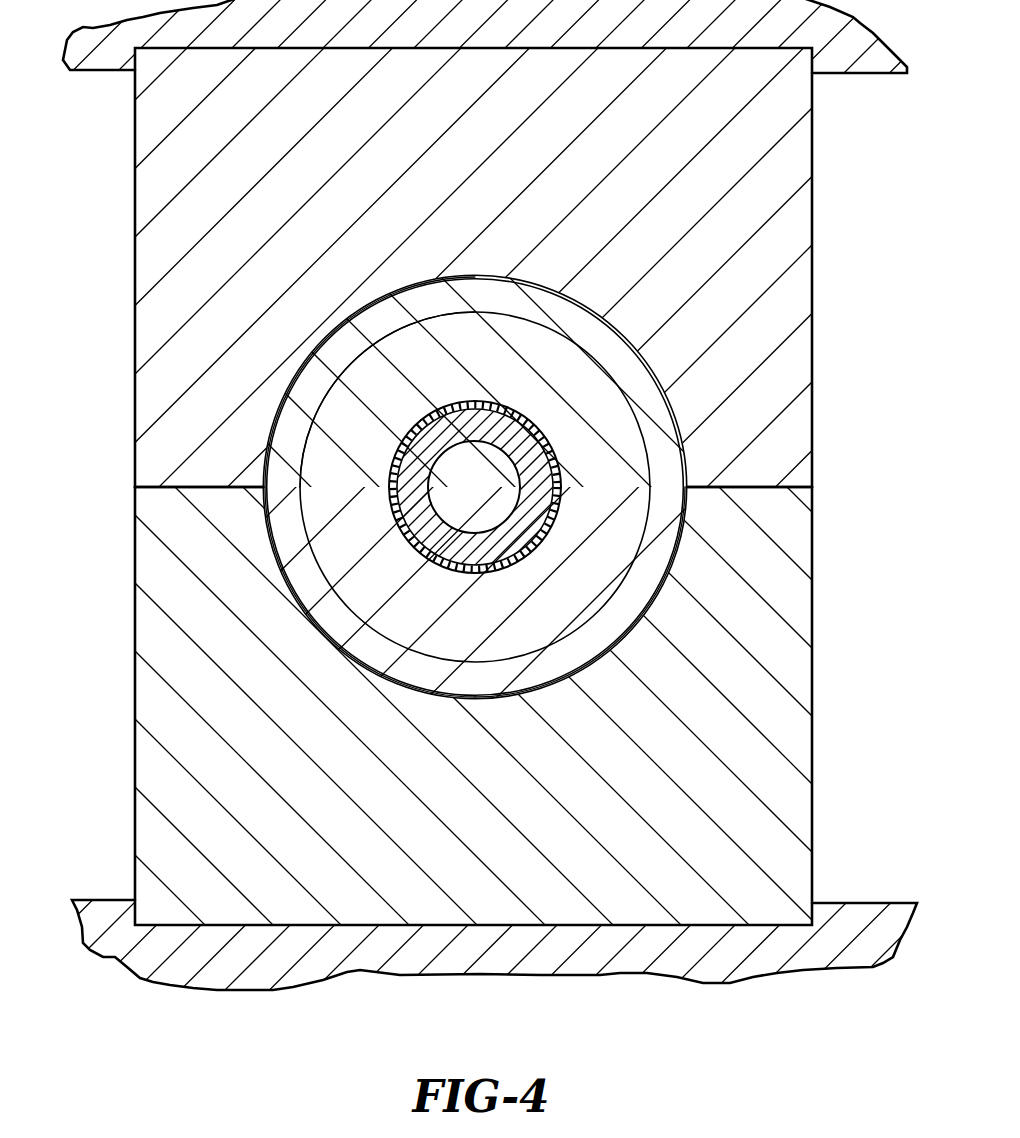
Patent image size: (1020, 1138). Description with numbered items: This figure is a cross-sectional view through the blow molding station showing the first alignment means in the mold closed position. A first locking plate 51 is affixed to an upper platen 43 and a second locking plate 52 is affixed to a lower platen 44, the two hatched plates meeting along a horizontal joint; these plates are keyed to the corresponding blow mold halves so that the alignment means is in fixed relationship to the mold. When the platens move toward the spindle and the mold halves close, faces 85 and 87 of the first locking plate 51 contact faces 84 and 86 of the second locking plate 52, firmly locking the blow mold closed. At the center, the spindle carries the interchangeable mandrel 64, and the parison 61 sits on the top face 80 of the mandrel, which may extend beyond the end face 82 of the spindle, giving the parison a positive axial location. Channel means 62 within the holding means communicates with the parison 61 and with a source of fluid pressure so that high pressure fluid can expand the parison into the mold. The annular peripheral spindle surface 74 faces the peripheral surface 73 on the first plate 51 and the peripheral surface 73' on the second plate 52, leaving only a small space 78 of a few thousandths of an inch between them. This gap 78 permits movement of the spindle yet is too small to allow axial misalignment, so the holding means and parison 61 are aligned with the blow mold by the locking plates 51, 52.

The platen 43 is at (813, 22).
The platen 44 is at (862, 920).
The first locking plate 51 is at (675, 162).
The second locking plate 52 is at (599, 867).
The parison 61 is at (532, 410).
The channel means 62 is at (459, 495).
The mandrel 64 is at (410, 491).
The peripheral surface 73 is at (474, 443).
The peripheral surface 73' is at (597, 622).
The annular peripheral spindle surface 74 is at (405, 284).
The space 78 is at (387, 680).
The top face 80 is at (517, 632).
The end face 82 is at (318, 373).
The face 84 is at (200, 487).
The face 85 is at (183, 487).
The face 86 is at (752, 490).
The face 87 is at (765, 487).